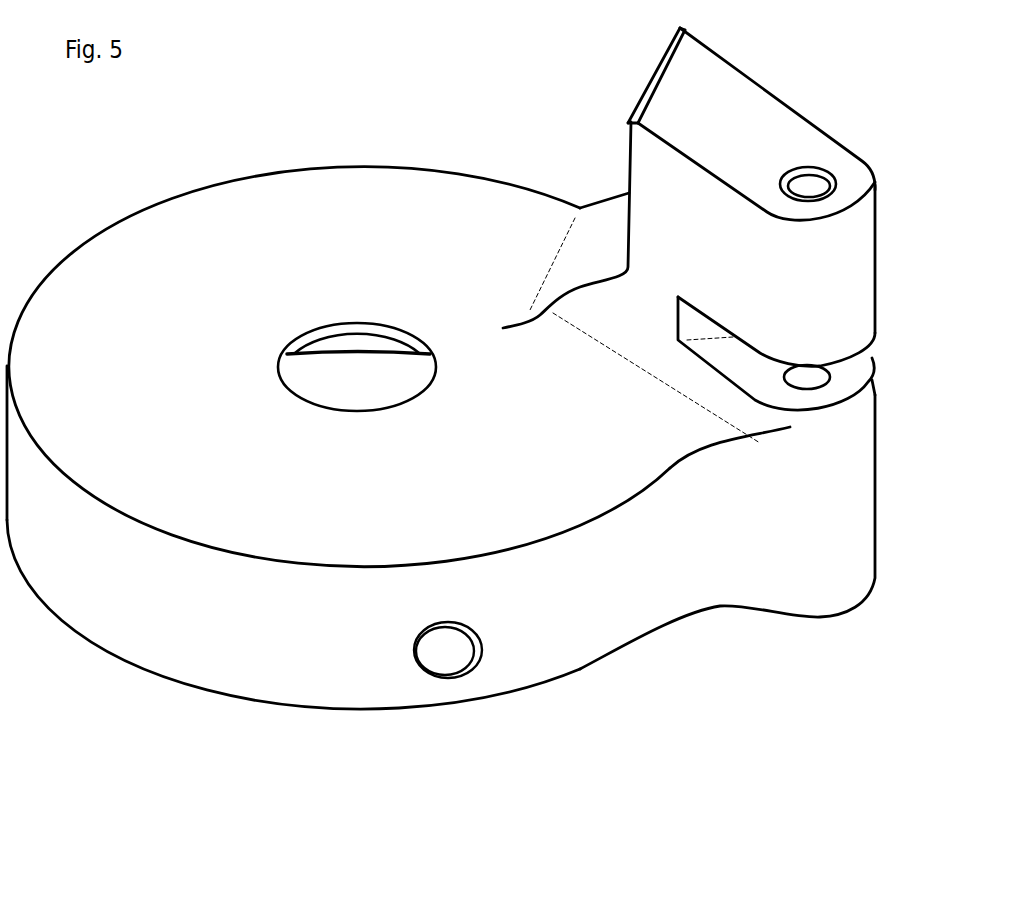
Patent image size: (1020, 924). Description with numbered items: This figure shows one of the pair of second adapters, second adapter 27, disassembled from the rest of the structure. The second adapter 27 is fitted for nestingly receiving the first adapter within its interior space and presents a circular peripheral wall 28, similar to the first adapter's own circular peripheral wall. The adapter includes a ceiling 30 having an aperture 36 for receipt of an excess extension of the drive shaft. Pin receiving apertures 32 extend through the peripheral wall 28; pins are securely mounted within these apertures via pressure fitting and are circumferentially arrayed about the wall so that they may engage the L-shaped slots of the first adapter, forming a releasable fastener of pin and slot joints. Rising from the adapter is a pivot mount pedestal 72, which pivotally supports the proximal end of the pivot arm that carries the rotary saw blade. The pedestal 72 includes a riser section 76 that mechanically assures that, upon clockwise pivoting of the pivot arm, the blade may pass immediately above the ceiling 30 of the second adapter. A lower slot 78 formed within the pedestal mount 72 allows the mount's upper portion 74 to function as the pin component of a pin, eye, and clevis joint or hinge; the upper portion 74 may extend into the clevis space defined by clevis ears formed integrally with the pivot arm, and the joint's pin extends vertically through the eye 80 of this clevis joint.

The second adapter 27 is at (136, 676).
The circular peripheral wall 28 is at (550, 622).
The ceiling 30 is at (287, 220).
The pin receiving apertures 32 is at (450, 652).
The aperture 36 is at (343, 375).
The pivot mount pedestal 72 is at (657, 186).
The upper portion 74 is at (850, 288).
The riser section 76 is at (692, 387).
The lower slot 78 is at (748, 365).
The eye 80 is at (810, 186).